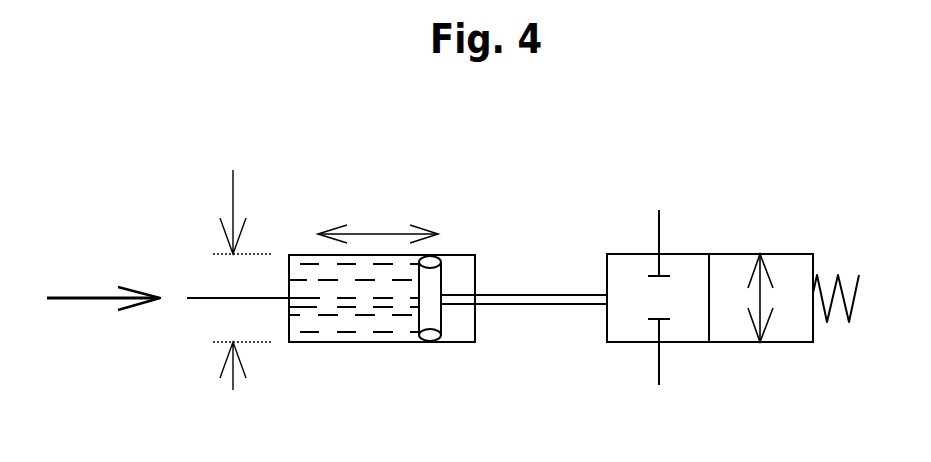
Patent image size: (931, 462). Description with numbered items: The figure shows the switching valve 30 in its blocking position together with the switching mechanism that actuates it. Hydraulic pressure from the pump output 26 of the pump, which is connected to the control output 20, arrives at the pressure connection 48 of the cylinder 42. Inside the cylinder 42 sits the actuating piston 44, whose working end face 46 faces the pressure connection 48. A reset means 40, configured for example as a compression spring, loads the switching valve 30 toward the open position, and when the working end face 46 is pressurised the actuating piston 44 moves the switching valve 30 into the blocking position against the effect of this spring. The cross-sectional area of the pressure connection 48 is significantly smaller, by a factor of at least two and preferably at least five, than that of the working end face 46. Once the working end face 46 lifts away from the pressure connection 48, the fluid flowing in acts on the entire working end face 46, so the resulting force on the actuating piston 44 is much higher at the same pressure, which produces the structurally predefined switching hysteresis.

The control output 20 is at (658, 284).
The pump output 26 is at (103, 289).
The switching valve 30 is at (735, 254).
The reset means 40 is at (853, 298).
The cylinder 42 is at (475, 273).
The actuating piston 44 is at (428, 315).
The working end face 46 is at (342, 388).
The pressure connection 48 is at (313, 288).